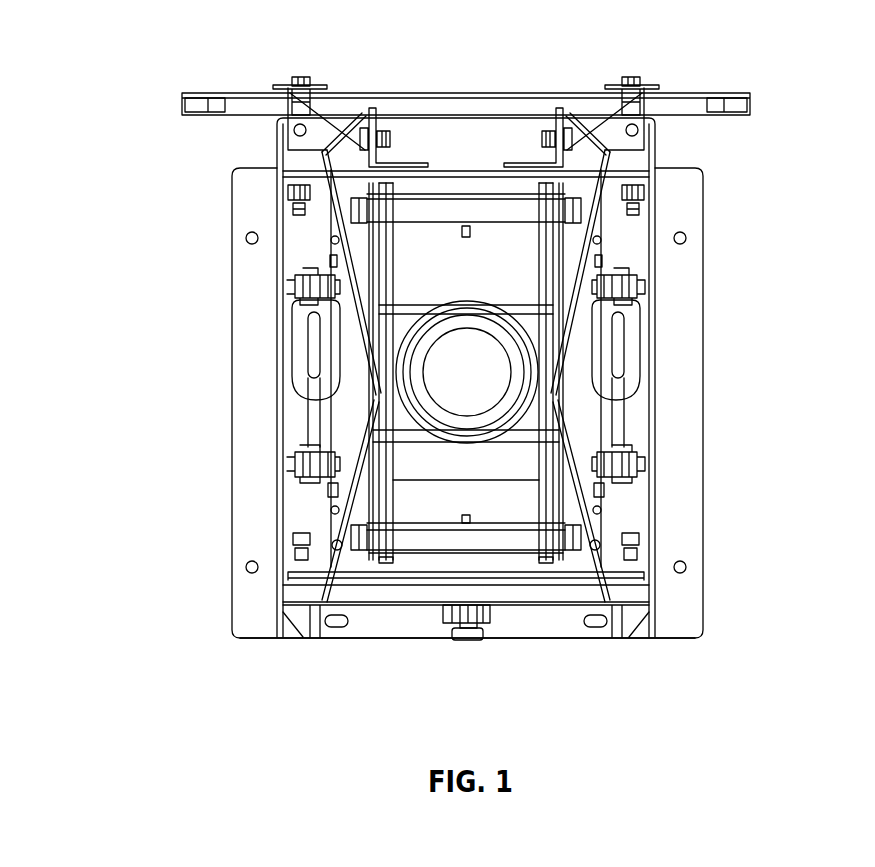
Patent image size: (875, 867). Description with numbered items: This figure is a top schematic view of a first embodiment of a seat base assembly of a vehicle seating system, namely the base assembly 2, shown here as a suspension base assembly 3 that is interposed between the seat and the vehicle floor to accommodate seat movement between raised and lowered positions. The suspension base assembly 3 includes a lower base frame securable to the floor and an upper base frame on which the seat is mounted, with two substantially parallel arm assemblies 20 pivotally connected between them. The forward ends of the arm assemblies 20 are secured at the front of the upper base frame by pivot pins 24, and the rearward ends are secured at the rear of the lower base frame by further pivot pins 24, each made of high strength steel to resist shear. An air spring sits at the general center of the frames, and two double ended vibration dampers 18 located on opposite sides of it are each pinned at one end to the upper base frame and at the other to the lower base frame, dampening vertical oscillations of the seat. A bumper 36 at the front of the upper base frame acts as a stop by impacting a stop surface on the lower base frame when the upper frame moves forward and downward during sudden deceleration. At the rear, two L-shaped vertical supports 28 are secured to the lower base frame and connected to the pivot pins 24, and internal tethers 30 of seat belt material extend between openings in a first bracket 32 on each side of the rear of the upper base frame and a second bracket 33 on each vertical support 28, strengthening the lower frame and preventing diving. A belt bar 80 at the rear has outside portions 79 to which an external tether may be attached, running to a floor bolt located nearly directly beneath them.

The base assembly 2 is at (731, 42).
The suspension base assembly 3 is at (700, 672).
The double ended vibration damper 18 is at (288, 357).
The arm assembly 20 is at (380, 398).
The pivot pin 24 is at (438, 540).
The vertical support 28 is at (402, 158).
The internal tether 30 is at (340, 110).
The first bracket 32 is at (300, 77).
The second bracket 33 is at (336, 150).
The bumper 36 is at (514, 638).
The outside portion of belt bar 79 is at (184, 103).
The belt bar 80 is at (258, 93).